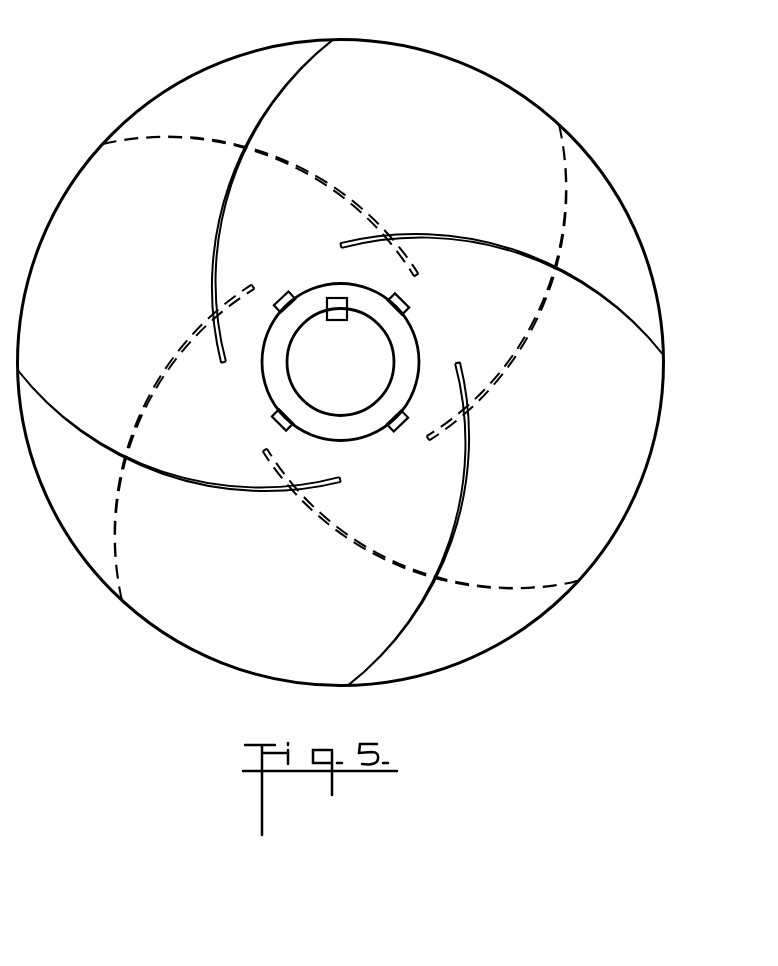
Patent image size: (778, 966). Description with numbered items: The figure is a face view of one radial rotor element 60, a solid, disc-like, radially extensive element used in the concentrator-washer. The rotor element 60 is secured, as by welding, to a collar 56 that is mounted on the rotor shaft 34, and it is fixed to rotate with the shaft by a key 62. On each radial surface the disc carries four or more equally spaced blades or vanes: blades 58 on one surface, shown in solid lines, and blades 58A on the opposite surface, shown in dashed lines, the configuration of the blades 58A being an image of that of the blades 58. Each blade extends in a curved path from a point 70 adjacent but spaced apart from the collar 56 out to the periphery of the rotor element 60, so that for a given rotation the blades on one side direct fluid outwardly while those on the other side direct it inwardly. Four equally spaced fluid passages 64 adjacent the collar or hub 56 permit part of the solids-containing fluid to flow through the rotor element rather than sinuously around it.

The rotor shaft 34 is at (371, 350).
The collar 56 is at (401, 328).
The blades 58 is at (633, 323).
The blades 58A is at (570, 218).
The radial rotor element 60 is at (599, 447).
The key 62 is at (341, 302).
The fluid passages 64 is at (283, 419).
The point 70 is at (338, 244).